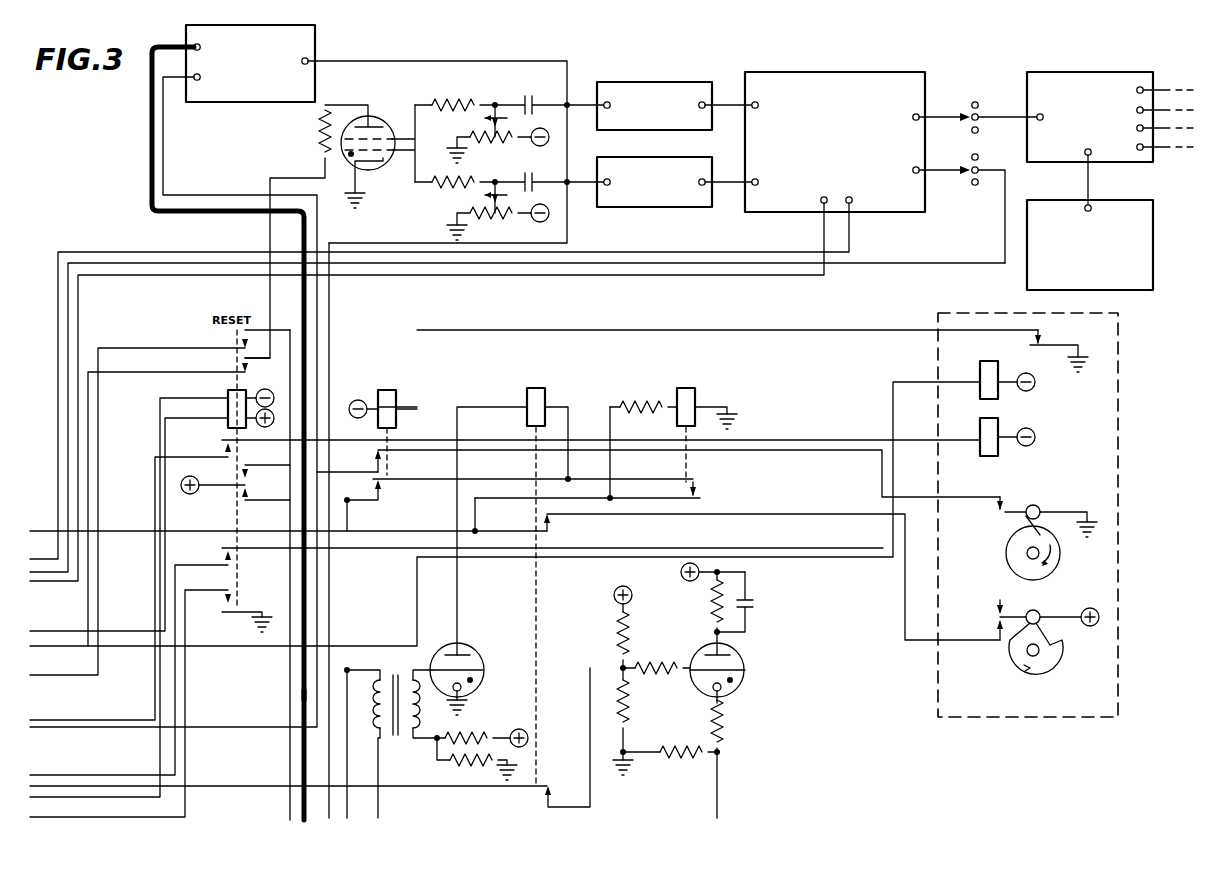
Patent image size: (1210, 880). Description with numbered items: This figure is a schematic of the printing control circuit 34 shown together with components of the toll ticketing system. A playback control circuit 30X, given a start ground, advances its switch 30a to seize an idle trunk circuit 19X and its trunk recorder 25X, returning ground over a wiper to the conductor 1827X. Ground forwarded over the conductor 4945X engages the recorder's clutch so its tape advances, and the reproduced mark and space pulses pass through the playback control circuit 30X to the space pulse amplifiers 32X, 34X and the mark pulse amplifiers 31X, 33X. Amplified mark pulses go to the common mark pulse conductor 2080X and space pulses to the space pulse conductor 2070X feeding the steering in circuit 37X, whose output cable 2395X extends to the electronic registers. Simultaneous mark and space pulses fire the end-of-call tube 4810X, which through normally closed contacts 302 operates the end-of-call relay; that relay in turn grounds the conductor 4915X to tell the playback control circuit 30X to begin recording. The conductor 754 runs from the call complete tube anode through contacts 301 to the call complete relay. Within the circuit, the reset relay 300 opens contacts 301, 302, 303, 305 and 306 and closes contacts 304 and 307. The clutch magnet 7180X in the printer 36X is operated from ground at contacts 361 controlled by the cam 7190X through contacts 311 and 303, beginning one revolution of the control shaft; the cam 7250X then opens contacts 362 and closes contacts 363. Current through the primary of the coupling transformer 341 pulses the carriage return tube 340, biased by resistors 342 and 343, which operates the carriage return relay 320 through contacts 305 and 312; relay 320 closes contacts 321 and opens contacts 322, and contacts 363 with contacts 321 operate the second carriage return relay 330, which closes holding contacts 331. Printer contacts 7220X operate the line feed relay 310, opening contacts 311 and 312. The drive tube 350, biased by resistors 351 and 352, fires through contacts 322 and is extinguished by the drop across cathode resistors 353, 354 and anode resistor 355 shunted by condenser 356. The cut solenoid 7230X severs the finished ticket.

The printing control circuit 34 is at (1078, 48).
The steering in circuit 37X is at (317, 50).
The output cable 2395X is at (151, 130).
The conductor 754 is at (300, 678).
The space pulse conductor 2070X is at (540, 58).
The common mark pulse conductor 2080X is at (331, 293).
The end-of-call tube 4810X is at (385, 93).
The space pulse amplifier 32X is at (586, 113).
The space pulse amplifier 34X is at (690, 80).
The mark pulse amplifier 31X is at (586, 189).
The mark pulse amplifier 33X is at (690, 155).
The playback control circuit 30X is at (928, 94).
The switch 30a is at (998, 98).
The trunk circuit 19X is at (1125, 68).
The trunk recorder 25X is at (1145, 198).
The conductor 4945X is at (820, 238).
The conductor 4915X is at (851, 238).
The conductor 1827X is at (948, 263).
The reset relay 300 is at (228, 395).
The normally closed contacts 301 is at (242, 345).
The normally closed contacts 302 is at (242, 372).
The contacts 303 is at (226, 447).
The contacts 304 is at (266, 475).
The normally closed contacts 305 is at (240, 488).
The contacts 306 is at (226, 555).
The contacts 307 is at (215, 600).
The line feed relay 310 is at (398, 426).
The contacts 311 is at (374, 452).
The normally closed contacts 312 is at (390, 485).
The carriage return relay 320 is at (525, 422).
The contacts 321 is at (556, 522).
The normally closed contacts 322 is at (544, 790).
The second carriage return relay 330 is at (677, 423).
The contacts 331 is at (703, 492).
The carriage return tube 340 is at (460, 655).
The coupling transformer 341 is at (398, 668).
The resistor 342 is at (472, 728).
The resistor 343 is at (455, 768).
The drive tube 350 is at (740, 660).
The resistor 351 is at (628, 628).
The resistor 352 is at (628, 710).
The cathode resistor 353 is at (730, 720).
The cathode resistor 354 is at (676, 758).
The anode resistor 355 is at (712, 596).
The condenser 356 is at (752, 606).
The printer 36X is at (1028, 515).
The contacts 7220X is at (1046, 338).
The cut solenoid 7230X is at (1000, 390).
The clutch magnet 7180X is at (1000, 445).
The normally closed contacts 361 is at (998, 506).
The normally closed contacts 362 is at (1008, 606).
The contacts 363 is at (998, 618).
The cam 7190X is at (1043, 580).
The cam 7250X is at (1046, 636).